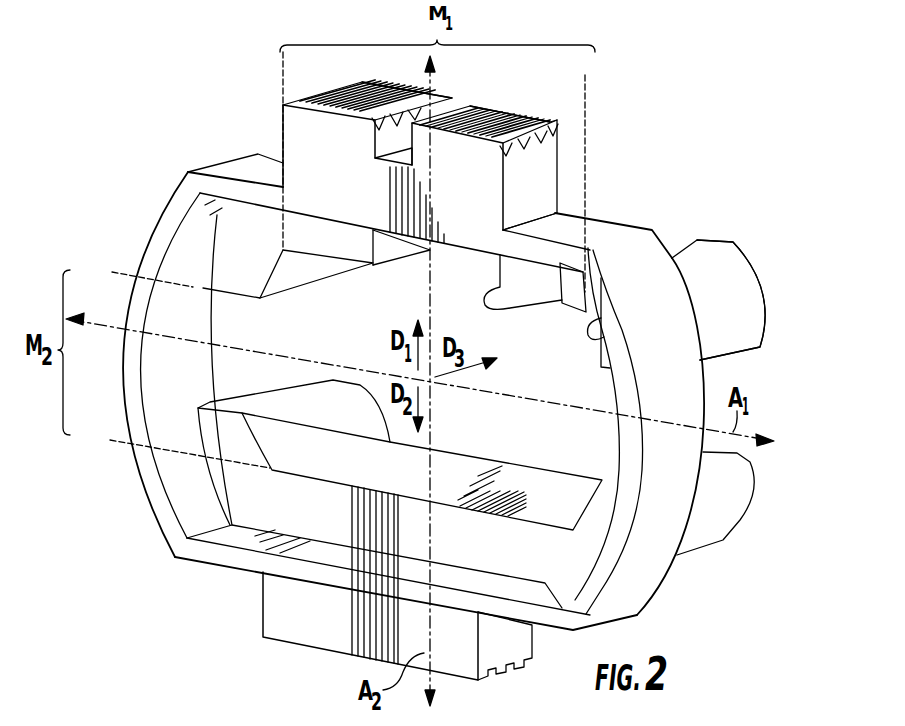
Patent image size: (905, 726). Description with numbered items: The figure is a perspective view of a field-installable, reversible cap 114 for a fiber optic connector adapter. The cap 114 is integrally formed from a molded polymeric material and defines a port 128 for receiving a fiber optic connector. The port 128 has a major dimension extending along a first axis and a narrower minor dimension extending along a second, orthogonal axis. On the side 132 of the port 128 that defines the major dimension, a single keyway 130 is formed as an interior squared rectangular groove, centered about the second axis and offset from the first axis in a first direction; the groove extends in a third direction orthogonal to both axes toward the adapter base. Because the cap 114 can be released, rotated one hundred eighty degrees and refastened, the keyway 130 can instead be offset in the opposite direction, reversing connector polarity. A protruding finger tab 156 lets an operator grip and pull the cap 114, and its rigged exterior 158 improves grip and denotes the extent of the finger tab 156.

The front cap 114 is at (710, 154).
The port 128 is at (610, 335).
The keyway 130 is at (570, 257).
The side of the port 132 is at (592, 246).
The protruding finger tab 156 is at (482, 180).
The rigged exterior 158 is at (468, 160).